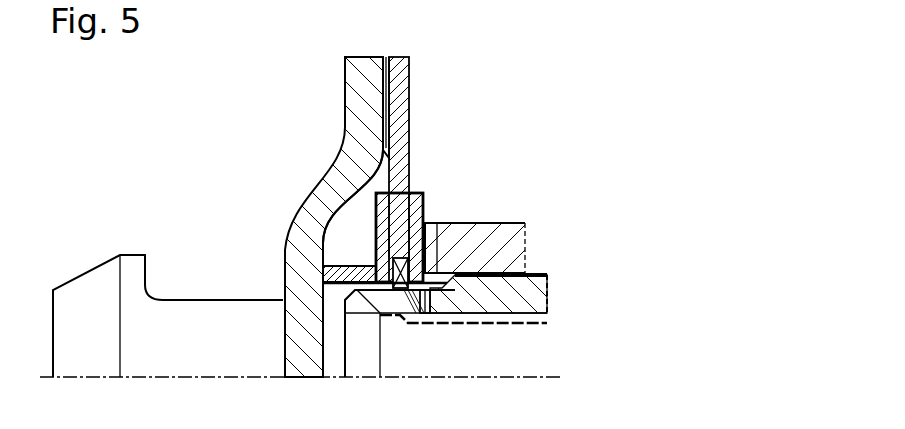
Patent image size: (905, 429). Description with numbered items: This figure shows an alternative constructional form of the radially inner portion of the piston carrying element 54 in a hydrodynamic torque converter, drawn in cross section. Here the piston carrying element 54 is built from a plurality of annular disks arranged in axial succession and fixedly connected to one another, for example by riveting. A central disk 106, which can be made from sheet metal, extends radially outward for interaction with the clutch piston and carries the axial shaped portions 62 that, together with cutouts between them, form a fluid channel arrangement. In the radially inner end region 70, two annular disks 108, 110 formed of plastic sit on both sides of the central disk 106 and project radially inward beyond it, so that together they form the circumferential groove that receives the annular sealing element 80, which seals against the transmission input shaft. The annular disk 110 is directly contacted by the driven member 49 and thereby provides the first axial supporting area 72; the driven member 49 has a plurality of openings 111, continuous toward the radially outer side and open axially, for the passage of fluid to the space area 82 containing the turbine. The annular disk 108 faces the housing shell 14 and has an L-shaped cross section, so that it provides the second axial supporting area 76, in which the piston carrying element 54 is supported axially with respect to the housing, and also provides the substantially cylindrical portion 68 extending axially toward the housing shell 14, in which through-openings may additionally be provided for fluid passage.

The housing shell 14 is at (368, 58).
The driven member 49 is at (522, 226).
The piston carrying element 54 is at (425, 88).
The axial shaped portions 62 is at (383, 99).
The substantially cylindrical portion 68 is at (337, 284).
The radially inner end region 70 is at (441, 181).
The first axial supporting area 72 is at (430, 248).
The second axial supporting area 76 is at (320, 265).
The annular sealing element 80 is at (402, 292).
The space area 82 is at (512, 66).
The central disk 106 is at (400, 145).
The annular disk 108 is at (345, 196).
The annular disk 110 is at (428, 207).
The openings 111 is at (440, 279).